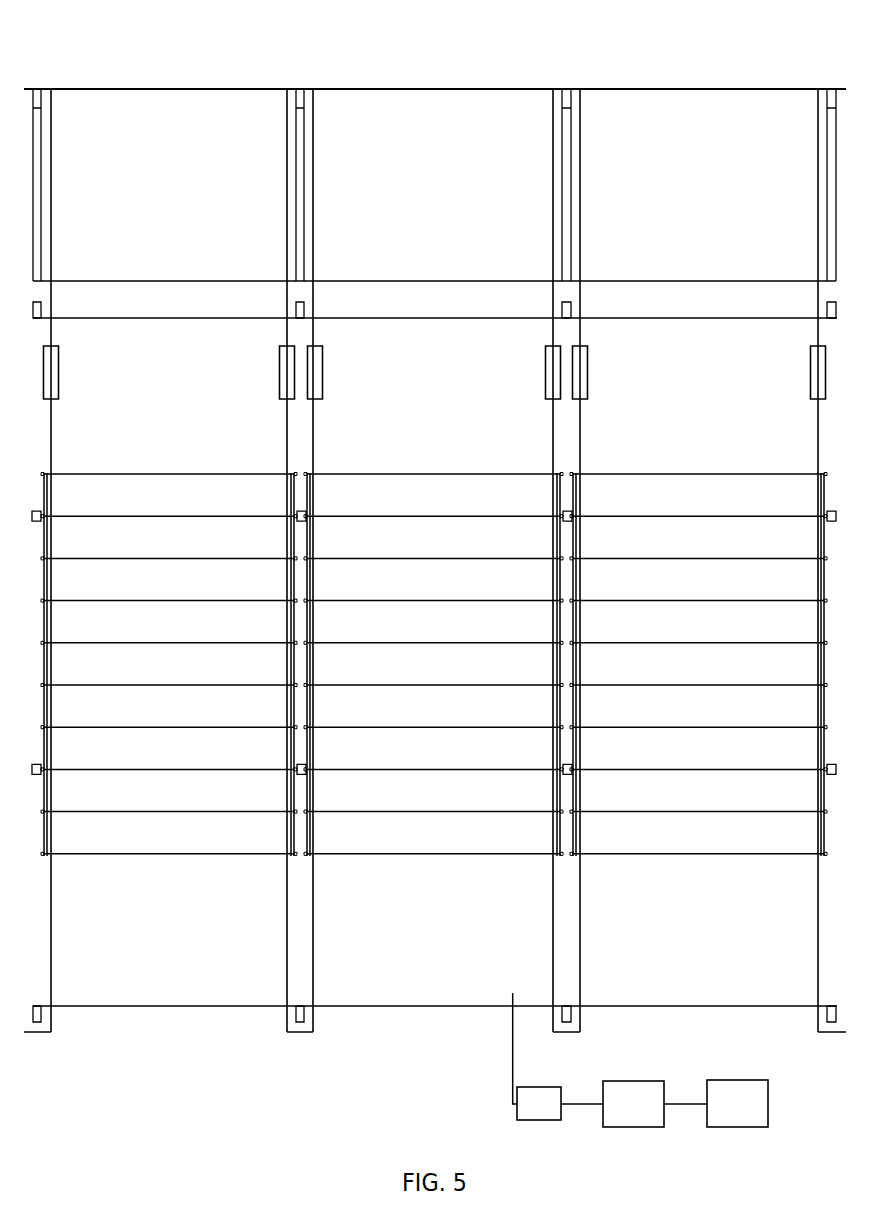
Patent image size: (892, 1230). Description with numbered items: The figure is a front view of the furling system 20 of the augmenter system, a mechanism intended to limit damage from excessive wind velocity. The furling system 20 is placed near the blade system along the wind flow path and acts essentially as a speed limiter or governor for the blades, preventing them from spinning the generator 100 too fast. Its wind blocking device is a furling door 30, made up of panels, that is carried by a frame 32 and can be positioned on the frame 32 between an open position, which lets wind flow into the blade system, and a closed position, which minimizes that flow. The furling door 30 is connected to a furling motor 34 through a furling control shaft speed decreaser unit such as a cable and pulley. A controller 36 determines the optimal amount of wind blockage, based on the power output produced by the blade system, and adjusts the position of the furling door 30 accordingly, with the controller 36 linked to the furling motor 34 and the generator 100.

The furling system 20 is at (715, 64).
The furling door 30 is at (795, 550).
The frame 32 is at (582, 1022).
The furling motor 34 is at (528, 1112).
The controller 36 is at (622, 1112).
The generator 100 is at (721, 1112).